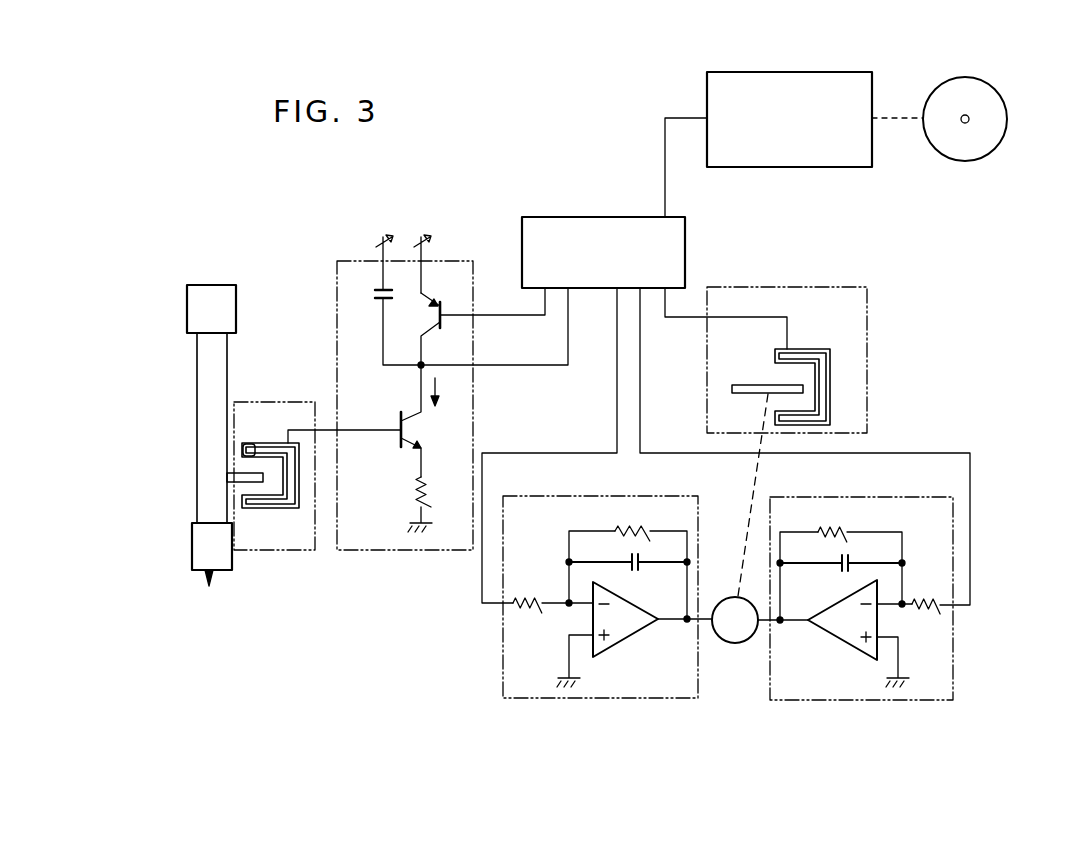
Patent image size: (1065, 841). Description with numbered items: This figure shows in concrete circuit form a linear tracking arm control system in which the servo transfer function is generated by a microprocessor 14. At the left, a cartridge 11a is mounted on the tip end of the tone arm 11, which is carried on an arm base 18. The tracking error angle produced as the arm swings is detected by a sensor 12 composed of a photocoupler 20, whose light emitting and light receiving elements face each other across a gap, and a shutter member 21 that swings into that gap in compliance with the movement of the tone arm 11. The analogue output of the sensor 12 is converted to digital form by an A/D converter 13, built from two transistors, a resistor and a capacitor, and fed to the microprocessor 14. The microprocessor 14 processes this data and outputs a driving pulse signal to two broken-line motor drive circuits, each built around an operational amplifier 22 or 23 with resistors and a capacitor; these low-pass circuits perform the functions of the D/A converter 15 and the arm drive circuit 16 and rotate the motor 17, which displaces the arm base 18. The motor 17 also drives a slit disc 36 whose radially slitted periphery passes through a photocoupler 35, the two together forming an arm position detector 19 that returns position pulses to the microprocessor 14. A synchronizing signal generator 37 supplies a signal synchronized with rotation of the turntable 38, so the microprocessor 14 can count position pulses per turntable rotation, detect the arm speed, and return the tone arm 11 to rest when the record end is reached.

The tone arm 11 is at (208, 457).
The cartridge 11a is at (197, 554).
The sensor 12 is at (287, 402).
The A/D converter 13 is at (344, 260).
The microprocessor 14 is at (588, 217).
The D/A converter 15 is at (515, 698).
The arm drive circuit 16 is at (790, 700).
The motor 17 is at (738, 644).
The arm base 18 is at (187, 318).
The arm position detector 19 is at (817, 287).
The photocoupler 20 is at (272, 510).
The shutter member 21 is at (248, 460).
The operational amplifier 22 is at (641, 629).
The operational amplifier 23 is at (822, 628).
The photocoupler 35 is at (818, 349).
The slit disc 36 is at (752, 385).
The synchronizing signal generator 37 is at (825, 72).
The turntable 38 is at (1007, 119).